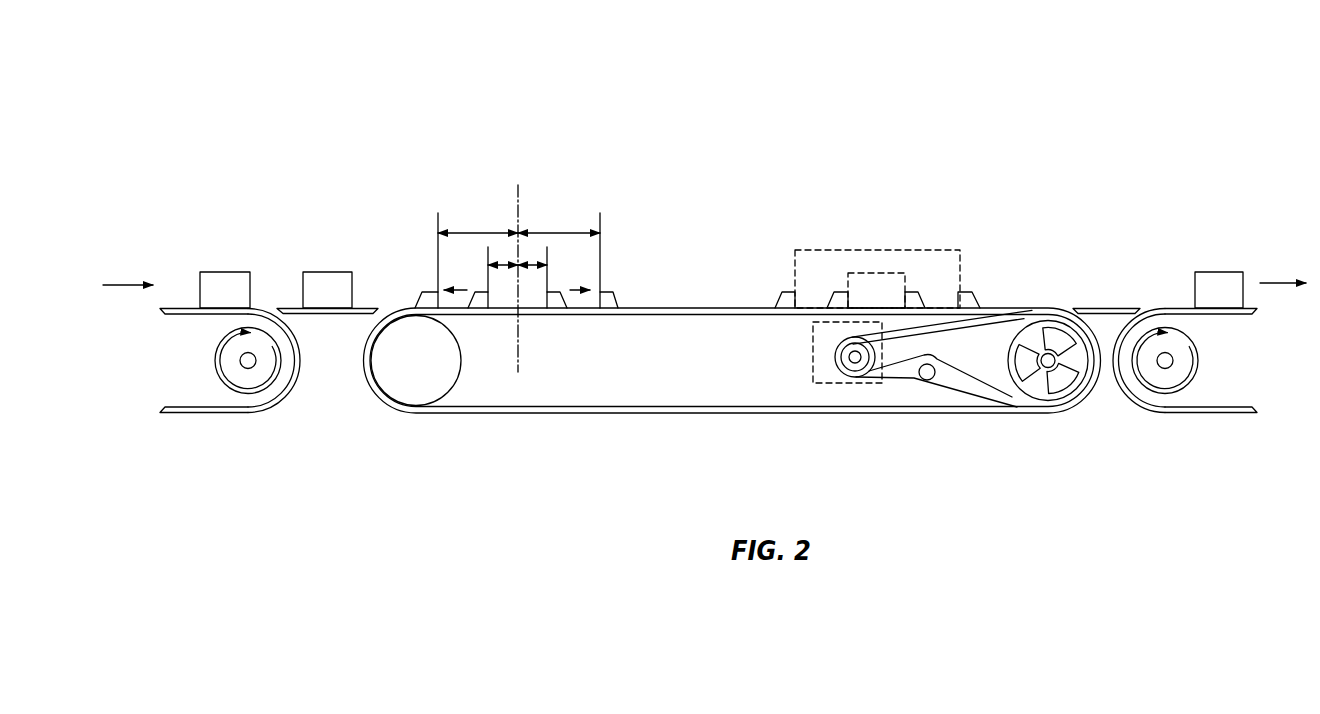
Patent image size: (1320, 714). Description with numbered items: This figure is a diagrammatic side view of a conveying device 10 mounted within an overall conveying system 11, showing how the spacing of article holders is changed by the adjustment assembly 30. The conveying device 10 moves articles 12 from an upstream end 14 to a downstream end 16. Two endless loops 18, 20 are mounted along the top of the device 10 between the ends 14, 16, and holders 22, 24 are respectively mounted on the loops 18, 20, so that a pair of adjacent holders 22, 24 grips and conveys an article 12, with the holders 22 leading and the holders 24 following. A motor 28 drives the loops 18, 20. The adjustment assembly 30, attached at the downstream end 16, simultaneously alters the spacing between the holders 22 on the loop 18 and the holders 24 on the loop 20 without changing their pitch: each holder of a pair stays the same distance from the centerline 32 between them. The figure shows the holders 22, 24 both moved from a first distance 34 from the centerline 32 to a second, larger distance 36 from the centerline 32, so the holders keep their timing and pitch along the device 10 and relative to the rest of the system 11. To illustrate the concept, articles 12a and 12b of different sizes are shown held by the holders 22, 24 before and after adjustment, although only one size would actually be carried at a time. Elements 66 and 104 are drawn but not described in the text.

The conveying device 10 is at (891, 103).
The conveying system 11 is at (262, 440).
The article 12 is at (228, 272).
The article 12a is at (873, 273).
The article 12b is at (928, 250).
The upstream end 14 is at (402, 440).
The downstream end 16 is at (1065, 435).
The endless loop 18 is at (700, 308).
The endless loop 20 is at (732, 360).
The holder 22 is at (558, 303).
The holder 24 is at (482, 300).
The motor 28 is at (813, 337).
The adjustment assembly 30 is at (1056, 304).
The centerline 32 is at (518, 331).
The first distance 34 is at (532, 268).
The second distance 36 is at (480, 233).
The tensioner arm 66 is at (898, 372).
The roller hub 104 is at (1085, 322).